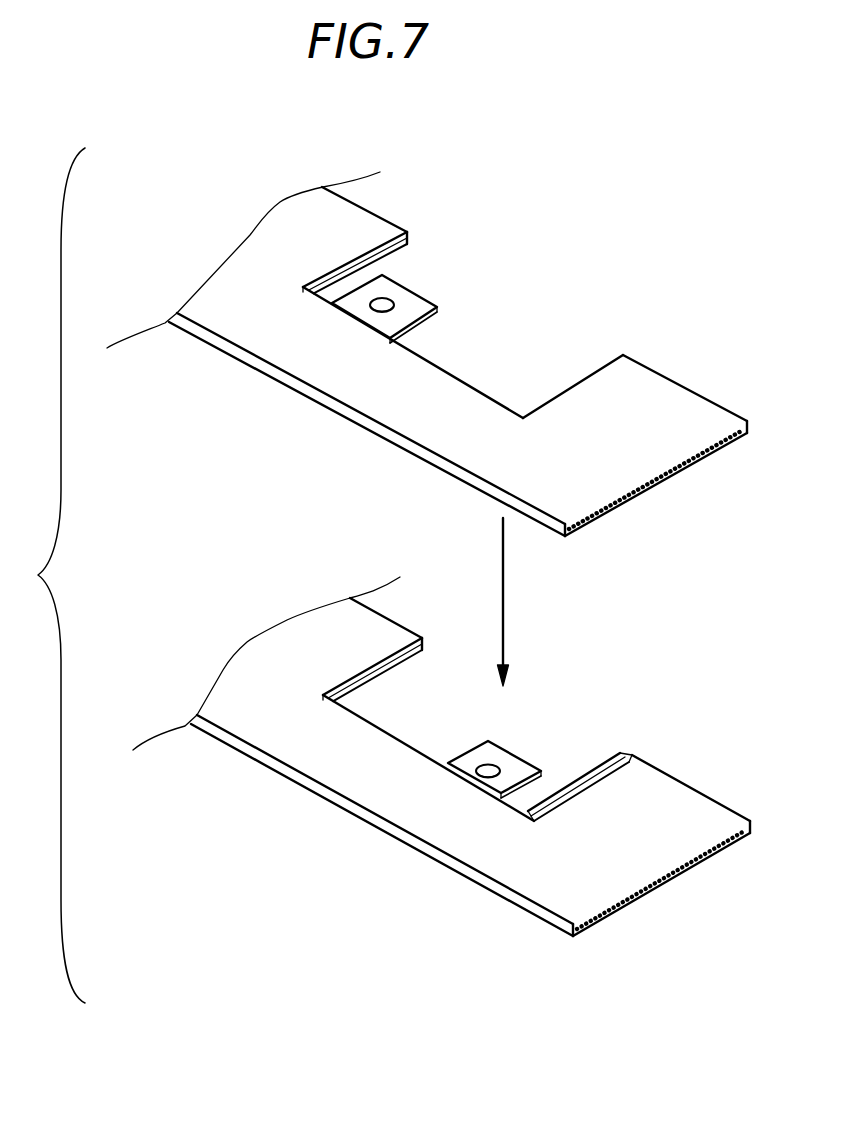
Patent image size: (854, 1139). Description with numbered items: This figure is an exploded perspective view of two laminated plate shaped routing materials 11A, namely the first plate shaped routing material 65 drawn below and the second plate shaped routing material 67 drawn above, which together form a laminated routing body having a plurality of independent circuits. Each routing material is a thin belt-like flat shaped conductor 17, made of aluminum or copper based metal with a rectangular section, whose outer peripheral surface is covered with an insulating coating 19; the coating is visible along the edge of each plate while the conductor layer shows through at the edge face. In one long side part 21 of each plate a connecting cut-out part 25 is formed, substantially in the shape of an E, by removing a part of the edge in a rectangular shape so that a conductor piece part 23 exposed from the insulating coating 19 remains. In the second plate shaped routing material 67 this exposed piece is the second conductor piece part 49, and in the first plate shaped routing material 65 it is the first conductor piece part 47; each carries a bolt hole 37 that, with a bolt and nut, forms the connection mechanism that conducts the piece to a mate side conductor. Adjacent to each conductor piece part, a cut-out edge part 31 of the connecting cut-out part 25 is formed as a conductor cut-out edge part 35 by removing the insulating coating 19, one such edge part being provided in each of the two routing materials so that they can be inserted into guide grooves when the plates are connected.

The plate shaped routing material 11A is at (428, 555).
The first plate shaped routing material 65 is at (313, 792).
The second plate shaped routing material 67 is at (258, 376).
The flat shaped conductor 17 is at (652, 490).
The insulating coating 19 is at (652, 415).
The one long side part 21 is at (375, 212).
The connecting cut-out part 25 is at (543, 323).
The cut-out edge part 31 is at (467, 549).
The conductor cut-out edge part 35 is at (412, 243).
The bolt hole 37 is at (391, 300).
The conductor piece part 23 is at (473, 508).
The first conductor piece part 47 is at (522, 762).
The second conductor piece part 49 is at (428, 297).